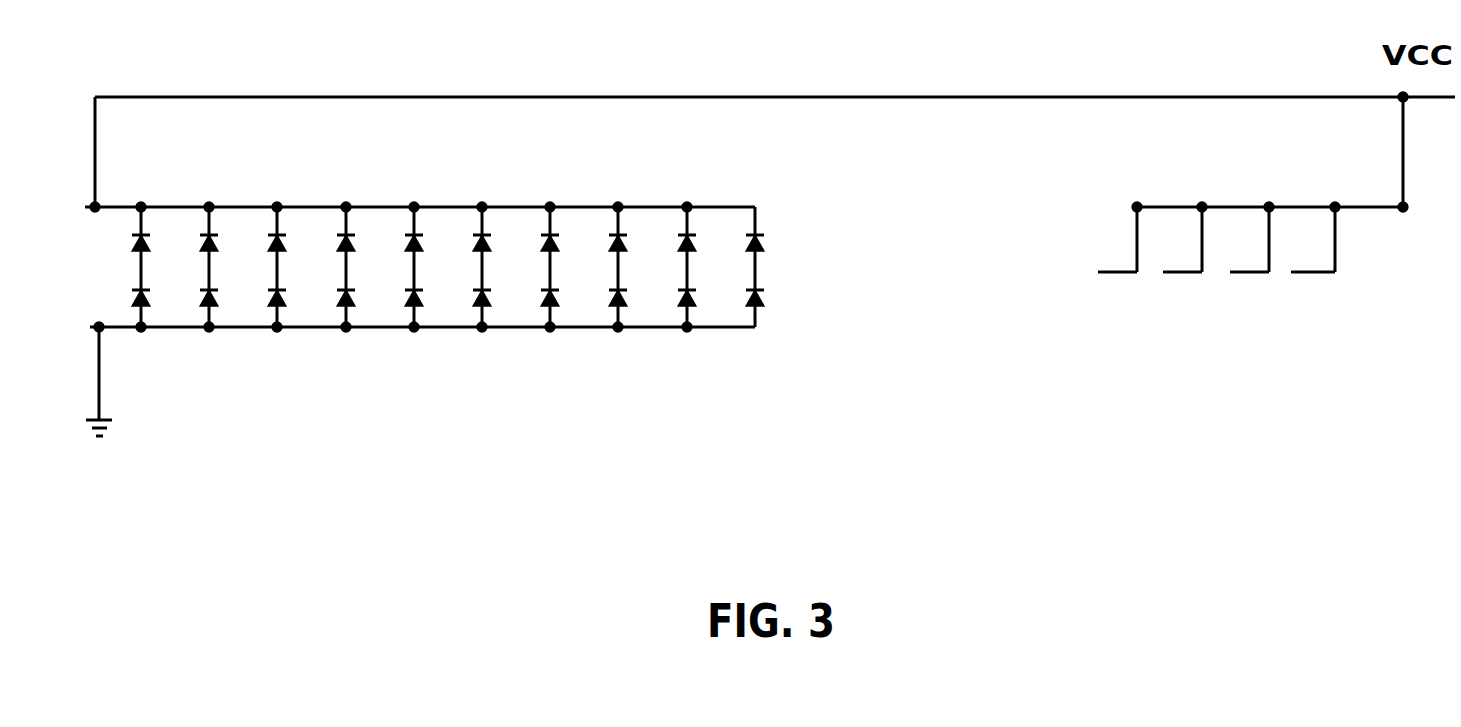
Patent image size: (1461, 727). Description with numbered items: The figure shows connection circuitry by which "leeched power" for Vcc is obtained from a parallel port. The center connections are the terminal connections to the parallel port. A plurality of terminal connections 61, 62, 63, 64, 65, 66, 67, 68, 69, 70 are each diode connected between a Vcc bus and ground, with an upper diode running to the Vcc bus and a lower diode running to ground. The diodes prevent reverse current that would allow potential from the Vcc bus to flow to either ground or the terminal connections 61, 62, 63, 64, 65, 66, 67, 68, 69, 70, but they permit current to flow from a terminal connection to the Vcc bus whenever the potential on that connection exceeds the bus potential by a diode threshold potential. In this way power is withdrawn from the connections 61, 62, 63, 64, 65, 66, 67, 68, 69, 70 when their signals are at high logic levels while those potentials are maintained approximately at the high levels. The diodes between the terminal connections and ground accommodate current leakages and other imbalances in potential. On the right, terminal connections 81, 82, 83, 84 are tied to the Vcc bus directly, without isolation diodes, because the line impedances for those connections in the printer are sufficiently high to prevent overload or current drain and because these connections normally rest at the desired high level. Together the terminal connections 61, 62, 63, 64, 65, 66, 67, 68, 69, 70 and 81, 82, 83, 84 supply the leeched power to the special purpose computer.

The terminal connection 61 is at (141, 266).
The terminal connection 62 is at (209, 266).
The terminal connection 63 is at (277, 266).
The terminal connection 64 is at (346, 266).
The terminal connection 65 is at (414, 266).
The terminal connection 66 is at (482, 266).
The terminal connection 67 is at (550, 266).
The terminal connection 68 is at (618, 266).
The terminal connection 69 is at (687, 266).
The terminal connection 70 is at (755, 266).
The terminal connection 81 is at (1120, 257).
The terminal connection 82 is at (1185, 257).
The terminal connection 83 is at (1252, 257).
The terminal connection 84 is at (1315, 257).